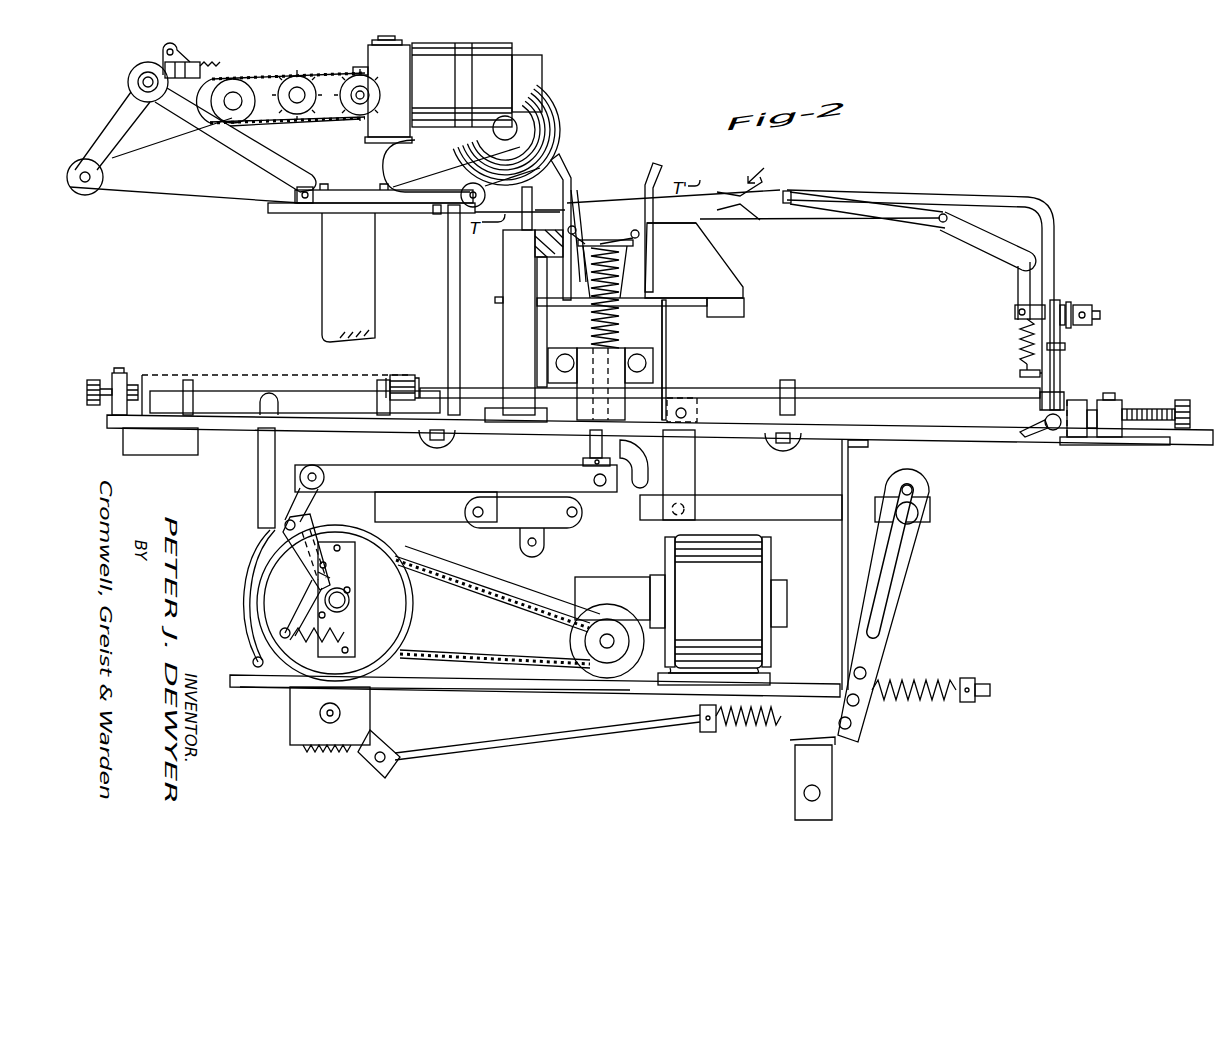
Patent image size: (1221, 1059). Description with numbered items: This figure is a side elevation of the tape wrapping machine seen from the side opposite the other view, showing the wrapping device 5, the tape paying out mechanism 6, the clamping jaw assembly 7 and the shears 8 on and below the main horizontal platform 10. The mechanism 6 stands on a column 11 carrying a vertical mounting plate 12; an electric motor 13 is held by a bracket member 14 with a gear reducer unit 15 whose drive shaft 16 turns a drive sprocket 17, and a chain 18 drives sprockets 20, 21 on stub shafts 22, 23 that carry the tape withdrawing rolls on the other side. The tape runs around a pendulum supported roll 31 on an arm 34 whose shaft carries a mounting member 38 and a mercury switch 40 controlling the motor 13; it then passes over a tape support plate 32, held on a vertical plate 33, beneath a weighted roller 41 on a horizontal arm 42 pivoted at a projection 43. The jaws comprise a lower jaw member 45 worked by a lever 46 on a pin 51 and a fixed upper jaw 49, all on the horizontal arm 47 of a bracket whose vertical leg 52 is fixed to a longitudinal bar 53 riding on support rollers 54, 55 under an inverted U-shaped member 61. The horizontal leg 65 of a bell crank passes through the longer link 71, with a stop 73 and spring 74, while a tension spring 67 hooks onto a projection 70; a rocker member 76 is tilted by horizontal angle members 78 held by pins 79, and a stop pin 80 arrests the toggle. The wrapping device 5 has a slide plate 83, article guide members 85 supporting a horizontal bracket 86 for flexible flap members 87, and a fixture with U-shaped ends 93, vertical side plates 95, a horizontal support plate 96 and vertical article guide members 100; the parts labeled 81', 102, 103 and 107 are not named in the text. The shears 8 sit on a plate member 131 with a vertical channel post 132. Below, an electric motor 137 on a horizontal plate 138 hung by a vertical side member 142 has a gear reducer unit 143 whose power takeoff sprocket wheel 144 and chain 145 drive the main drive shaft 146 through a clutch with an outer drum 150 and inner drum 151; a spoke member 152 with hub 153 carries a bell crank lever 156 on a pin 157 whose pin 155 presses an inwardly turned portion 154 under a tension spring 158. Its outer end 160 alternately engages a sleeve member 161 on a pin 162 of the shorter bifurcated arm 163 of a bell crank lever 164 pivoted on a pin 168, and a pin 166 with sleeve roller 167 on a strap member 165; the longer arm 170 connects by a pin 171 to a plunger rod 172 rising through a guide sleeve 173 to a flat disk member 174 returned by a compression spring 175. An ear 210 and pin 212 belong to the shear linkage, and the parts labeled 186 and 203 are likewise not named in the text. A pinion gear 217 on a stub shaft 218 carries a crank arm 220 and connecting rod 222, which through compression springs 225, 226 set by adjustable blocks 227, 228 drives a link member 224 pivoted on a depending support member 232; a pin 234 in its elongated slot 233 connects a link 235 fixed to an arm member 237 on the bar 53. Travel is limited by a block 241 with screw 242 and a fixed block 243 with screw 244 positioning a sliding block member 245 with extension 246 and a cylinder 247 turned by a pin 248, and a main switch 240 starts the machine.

The tape applying and wrapping device 5 is at (784, 274).
The tape paying out mechanism 6 is at (267, 72).
The tape clamping jaw assembly 7 is at (763, 172).
The shears 8 is at (515, 196).
The main horizontal platform 10 is at (215, 427).
The column 11 is at (320, 297).
The vertical mounting plate 12 is at (245, 160).
The electric motor 13 is at (520, 54).
The bracket member 14 is at (425, 150).
The gear reducer unit 15 is at (370, 50).
The drive shaft 16 is at (372, 92).
The drive sprocket 17 is at (350, 80).
The chain 18 is at (318, 132).
The sprocket 20 is at (306, 100).
The sprocket 21 is at (205, 130).
The stub shaft 22 is at (295, 112).
The stub shaft 23 is at (224, 102).
The pendulum supported roll 31 is at (103, 180).
The tape support plate 32 is at (388, 214).
The vertical plate 33 is at (447, 305).
The arm 34 is at (117, 125).
The mounting member 38 is at (170, 80).
The mercury switch 40 is at (142, 68).
The weighted roller 41 is at (468, 188).
The horizontal arm 42 is at (437, 210).
The projection 43 is at (296, 194).
The lower jaw member 45 is at (732, 225).
The lever 46 is at (798, 196).
The horizontal arm 47 is at (920, 207).
The fixed upper jaw 49 is at (790, 187).
The pin 51 is at (941, 224).
The vertical leg 52 is at (1054, 268).
The longitudinal bar 53 is at (350, 390).
The support roller 54 is at (772, 462).
The support roller 55 is at (455, 440).
The inverted U-shaped member 61 is at (790, 382).
The horizontal leg 65 is at (1020, 312).
The tension spring 67 is at (1020, 343).
The projection 70 is at (1019, 374).
The longer link 71 is at (1061, 333).
The stop 73 is at (1087, 308).
The spring 74 is at (1068, 302).
The rocker member 76 is at (398, 376).
The horizontal angle members 78 is at (268, 395).
The pins 79 is at (190, 380).
The stop pin 80 is at (1065, 347).
The bar 81' is at (676, 360).
The slide plate 83 is at (668, 340).
The article guide members 85 is at (572, 167).
The horizontal bracket 86 is at (545, 252).
The flexible flap members 87 is at (620, 240).
The U-shaped ends 93 is at (745, 318).
The vertical side plates 95 is at (712, 255).
The horizontal support plate 96 is at (660, 226).
The vertical article guide members 100 is at (650, 170).
The strip 102 is at (580, 205).
The bar 103 is at (545, 310).
The bearing blocks 107 is at (556, 364).
The plate member 131 is at (540, 412).
The vertical channel post 132 is at (502, 348).
The electric motor 137 is at (775, 563).
The horizontal plate 138 is at (505, 690).
The vertical side member 142 is at (285, 740).
The gear reducer unit 143 is at (595, 645).
The power takeoff sprocket wheel 144 is at (590, 637).
The chain 145 is at (512, 604).
The main drive shaft 146 is at (355, 617).
The outer drum 150 is at (420, 563).
The inner drum 151 is at (435, 622).
The spoke member 152 is at (355, 585).
The hub 153 is at (350, 602).
The inwardly turned portion 154 is at (325, 575).
The pin 155 is at (324, 560).
The bell crank lever 156 is at (290, 612).
The pin 157 is at (350, 570).
The tension spring 158 is at (342, 648).
The outer end 160 is at (318, 520).
The sleeve member 161 is at (282, 526).
The pin 162 is at (272, 520).
The shorter bifurcated arm 163 is at (295, 497).
The bell crank lever 164 is at (340, 463).
The strap member 165 is at (250, 638).
The pin 166 is at (253, 664).
The sleeve roller 167 is at (250, 662).
The pin 168 is at (325, 477).
The longer arm 170 is at (425, 498).
The pin 171 is at (600, 488).
The plunger rod 172 is at (590, 445).
The guide sleeve 173 is at (625, 400).
The flat disk member 174 is at (634, 244).
The compression spring 175 is at (616, 320).
The frame line 186 is at (440, 675).
The slot plate 203 is at (512, 530).
The ear 210 is at (548, 541).
The pin 212 is at (483, 512).
The pinion gear 217 is at (320, 754).
The stub shaft 218 is at (342, 713).
The crank arm 220 is at (385, 768).
The connecting rod 222 is at (628, 735).
The link member 224 is at (880, 660).
The compression spring 225 is at (895, 705).
The compression spring 226 is at (755, 726).
The adjustable block member 227 is at (968, 703).
The adjustable block 228 is at (705, 732).
The depending support member 232 is at (835, 808).
The elongated slot 233 is at (895, 570).
The pin 234 is at (918, 513).
The link 235 is at (718, 500).
The arm member 237 is at (696, 453).
The main switch 240 is at (150, 456).
The block 241 is at (128, 376).
The screw 242 is at (96, 380).
The fixed block 243 is at (1112, 398).
The screw 244 is at (1166, 408).
The sliding block member 245 is at (1072, 402).
The extension 246 is at (1150, 446).
The cylinder 247 is at (1053, 432).
The pin 248 is at (1030, 438).